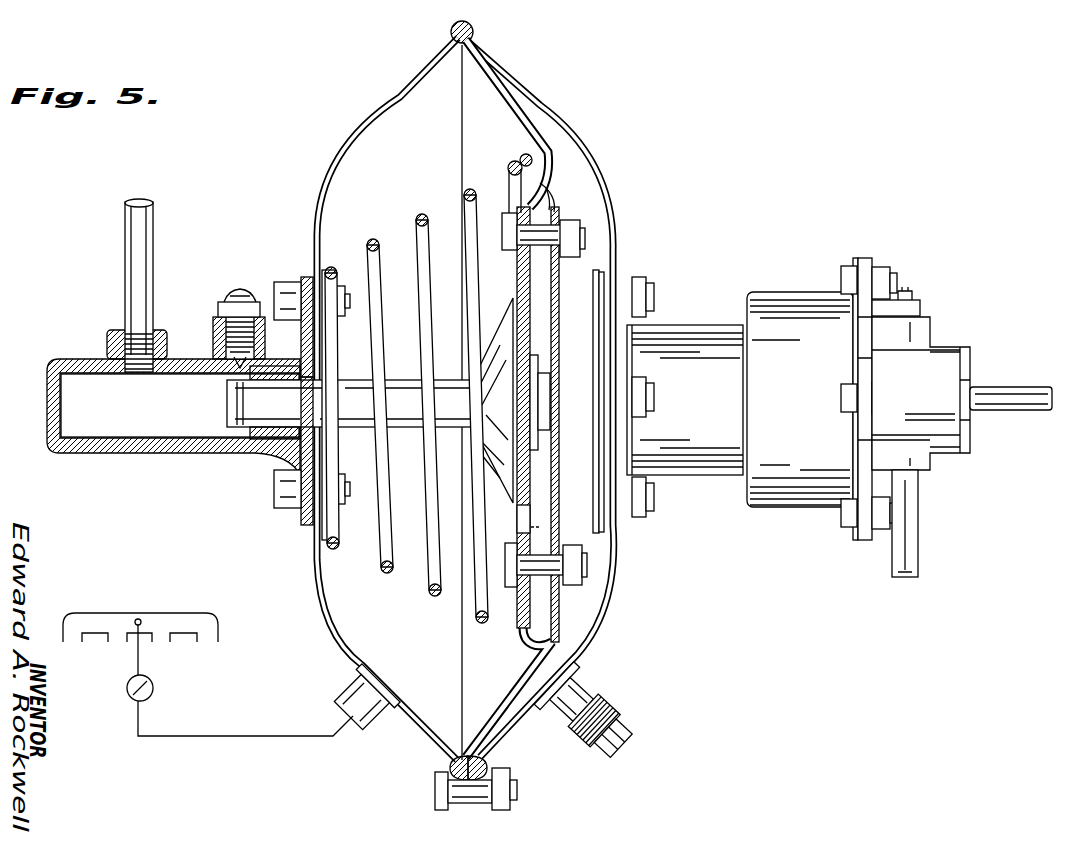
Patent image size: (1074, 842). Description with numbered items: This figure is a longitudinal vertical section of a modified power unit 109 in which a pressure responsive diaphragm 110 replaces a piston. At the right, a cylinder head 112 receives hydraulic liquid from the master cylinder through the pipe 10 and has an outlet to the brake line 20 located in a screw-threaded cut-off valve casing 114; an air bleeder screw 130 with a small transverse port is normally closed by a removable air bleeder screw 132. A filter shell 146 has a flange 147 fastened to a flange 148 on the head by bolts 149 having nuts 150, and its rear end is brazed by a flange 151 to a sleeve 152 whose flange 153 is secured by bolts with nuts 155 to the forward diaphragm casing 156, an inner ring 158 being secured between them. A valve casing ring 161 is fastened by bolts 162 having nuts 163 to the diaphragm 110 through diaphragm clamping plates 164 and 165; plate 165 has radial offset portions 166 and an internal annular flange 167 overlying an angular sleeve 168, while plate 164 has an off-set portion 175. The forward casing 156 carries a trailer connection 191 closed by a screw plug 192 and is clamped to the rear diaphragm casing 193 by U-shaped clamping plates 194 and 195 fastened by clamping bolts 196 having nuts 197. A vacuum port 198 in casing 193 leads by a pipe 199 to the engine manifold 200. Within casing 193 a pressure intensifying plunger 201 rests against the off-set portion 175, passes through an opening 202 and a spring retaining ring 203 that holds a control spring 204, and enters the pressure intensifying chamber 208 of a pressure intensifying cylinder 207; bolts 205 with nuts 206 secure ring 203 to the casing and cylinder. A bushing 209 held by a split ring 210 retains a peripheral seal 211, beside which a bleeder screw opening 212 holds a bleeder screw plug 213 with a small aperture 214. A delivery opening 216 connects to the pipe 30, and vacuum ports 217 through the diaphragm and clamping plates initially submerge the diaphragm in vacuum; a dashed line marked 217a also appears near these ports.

The pipe 10 is at (910, 537).
The brake line 20 is at (1030, 409).
The pipe 30 is at (132, 232).
The power unit 109 is at (336, 118).
The diaphragm 110 is at (500, 92).
The cylinder head 112 is at (950, 438).
The cut-off valve casing 114 is at (968, 355).
The air bleeder screw 130 is at (922, 306).
The removable air bleeder screw 132 is at (912, 294).
The filter shell 146 is at (790, 492).
The flange 147 is at (855, 262).
The flange 148 is at (870, 262).
The bolts 149 is at (842, 280).
The nuts 150 is at (888, 274).
The flange 151 is at (830, 440).
The sleeve 152 is at (688, 330).
The flange 153 is at (606, 278).
The nuts 155 is at (644, 288).
The forward diaphragm casing 156 is at (535, 108).
The inner ring 158 is at (601, 284).
The valve casing ring 161 is at (557, 322).
The bolts 162 is at (505, 230).
The nuts 163 is at (570, 222).
The diaphragm clamping plate 164 is at (512, 190).
The diaphragm clamping plate 165 is at (548, 200).
The radial offset portions 166 is at (517, 294).
The internal annular flange 167 is at (548, 392).
The angular sleeve 168 is at (536, 362).
The off-set portion 175 is at (490, 348).
The trailer connection 191 is at (590, 688).
The screw plug 192 is at (628, 738).
The rear diaphragm casing 193 is at (398, 100).
The U-shaped clamping plate 194 is at (452, 768).
The U-shaped clamping plate 195 is at (492, 766).
The clamping bolts 196 is at (436, 790).
The nuts 197 is at (512, 786).
The vacuum port 198 is at (350, 694).
The pipe 199 is at (218, 740).
The manifold 200 is at (106, 624).
The pressure intensifying plunger 201 is at (396, 394).
The opening 202 is at (314, 356).
The spring retaining ring 203 is at (326, 336).
The control spring 204 is at (418, 216).
The bolts 205 is at (342, 300).
The nuts 206 is at (290, 282).
The pressure intensifying cylinder 207 is at (80, 364).
The pressure intensifying chamber 208 is at (158, 430).
The bushing 209 is at (280, 442).
The split ring 210 is at (302, 436).
The peripheral seal 211 is at (240, 425).
The bleeder screw opening 212 is at (245, 372).
The bleeder screw plug 213 is at (222, 313).
The small aperture 214 is at (235, 298).
The delivery opening 216 is at (140, 368).
The vacuum ports 217 is at (517, 527).
The line 217a is at (541, 528).